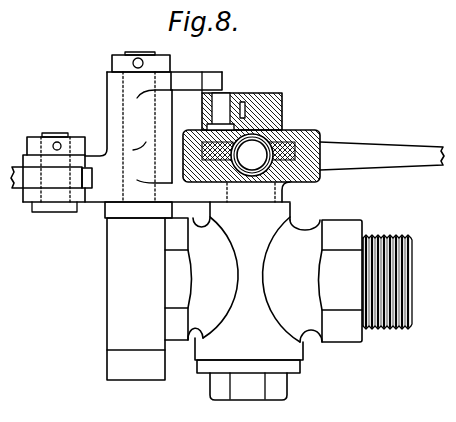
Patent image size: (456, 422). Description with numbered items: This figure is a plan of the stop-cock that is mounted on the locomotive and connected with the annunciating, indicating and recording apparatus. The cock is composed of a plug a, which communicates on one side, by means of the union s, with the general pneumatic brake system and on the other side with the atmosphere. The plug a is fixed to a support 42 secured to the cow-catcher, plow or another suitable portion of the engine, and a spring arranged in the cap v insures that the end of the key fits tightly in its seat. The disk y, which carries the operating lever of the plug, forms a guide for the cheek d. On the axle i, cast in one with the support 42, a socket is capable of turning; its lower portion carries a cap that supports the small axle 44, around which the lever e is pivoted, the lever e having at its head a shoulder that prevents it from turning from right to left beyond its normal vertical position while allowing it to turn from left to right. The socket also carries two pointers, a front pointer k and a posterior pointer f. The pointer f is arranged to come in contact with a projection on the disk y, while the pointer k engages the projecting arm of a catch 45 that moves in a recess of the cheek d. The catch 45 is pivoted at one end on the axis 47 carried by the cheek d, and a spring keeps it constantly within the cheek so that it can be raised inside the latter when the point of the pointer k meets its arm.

The plug a is at (310, 236).
The union s is at (408, 292).
The cap v is at (281, 391).
The lever e is at (227, 165).
The cheek d is at (283, 108).
The front pointer k is at (214, 75).
The axle i is at (146, 54).
The posterior pointer f is at (195, 190).
The disk y is at (298, 194).
The support 42 is at (138, 291).
The small axle 44 is at (67, 133).
The catch 45 is at (202, 113).
The axis 47 is at (222, 94).